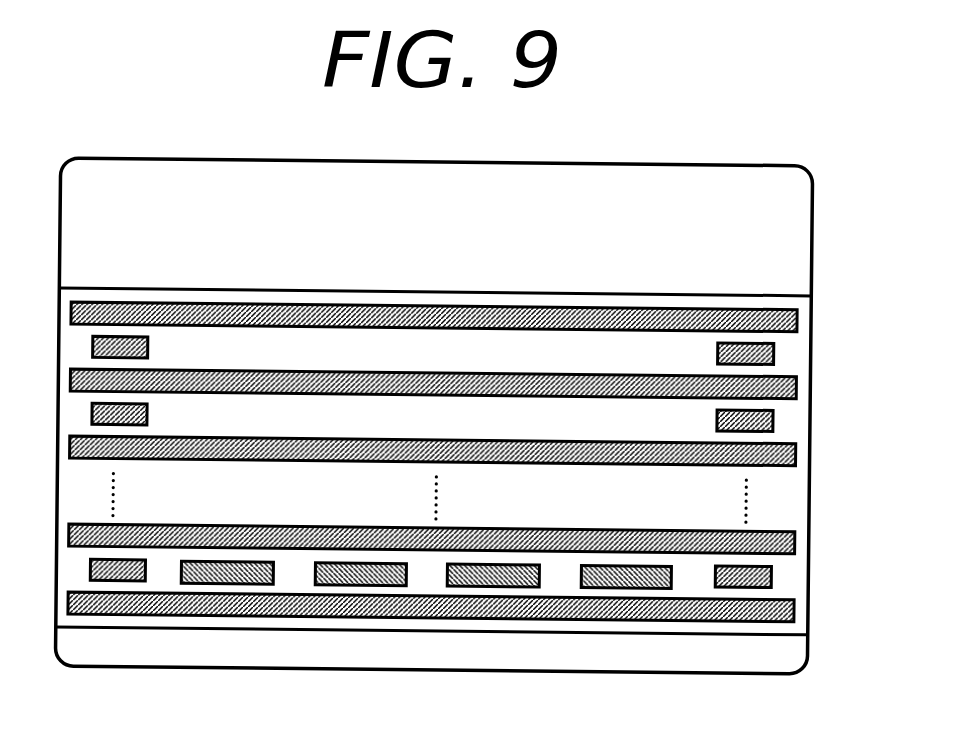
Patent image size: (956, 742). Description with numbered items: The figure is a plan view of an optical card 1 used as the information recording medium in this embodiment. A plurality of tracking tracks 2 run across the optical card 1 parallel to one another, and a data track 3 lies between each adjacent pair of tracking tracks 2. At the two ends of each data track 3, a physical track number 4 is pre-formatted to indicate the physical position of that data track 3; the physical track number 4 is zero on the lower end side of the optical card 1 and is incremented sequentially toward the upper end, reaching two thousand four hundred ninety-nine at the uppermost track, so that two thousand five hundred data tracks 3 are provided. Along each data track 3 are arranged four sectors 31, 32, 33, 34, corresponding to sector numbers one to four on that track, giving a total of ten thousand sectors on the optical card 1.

The optical card 1 is at (812, 218).
The tracking tracks 2 is at (796, 316).
The data track 3 is at (165, 337).
The physical track number 4 is at (92, 415).
The sector 31 is at (227, 582).
The sector 32 is at (359, 584).
The sector 33 is at (492, 584).
The sector 34 is at (627, 584).